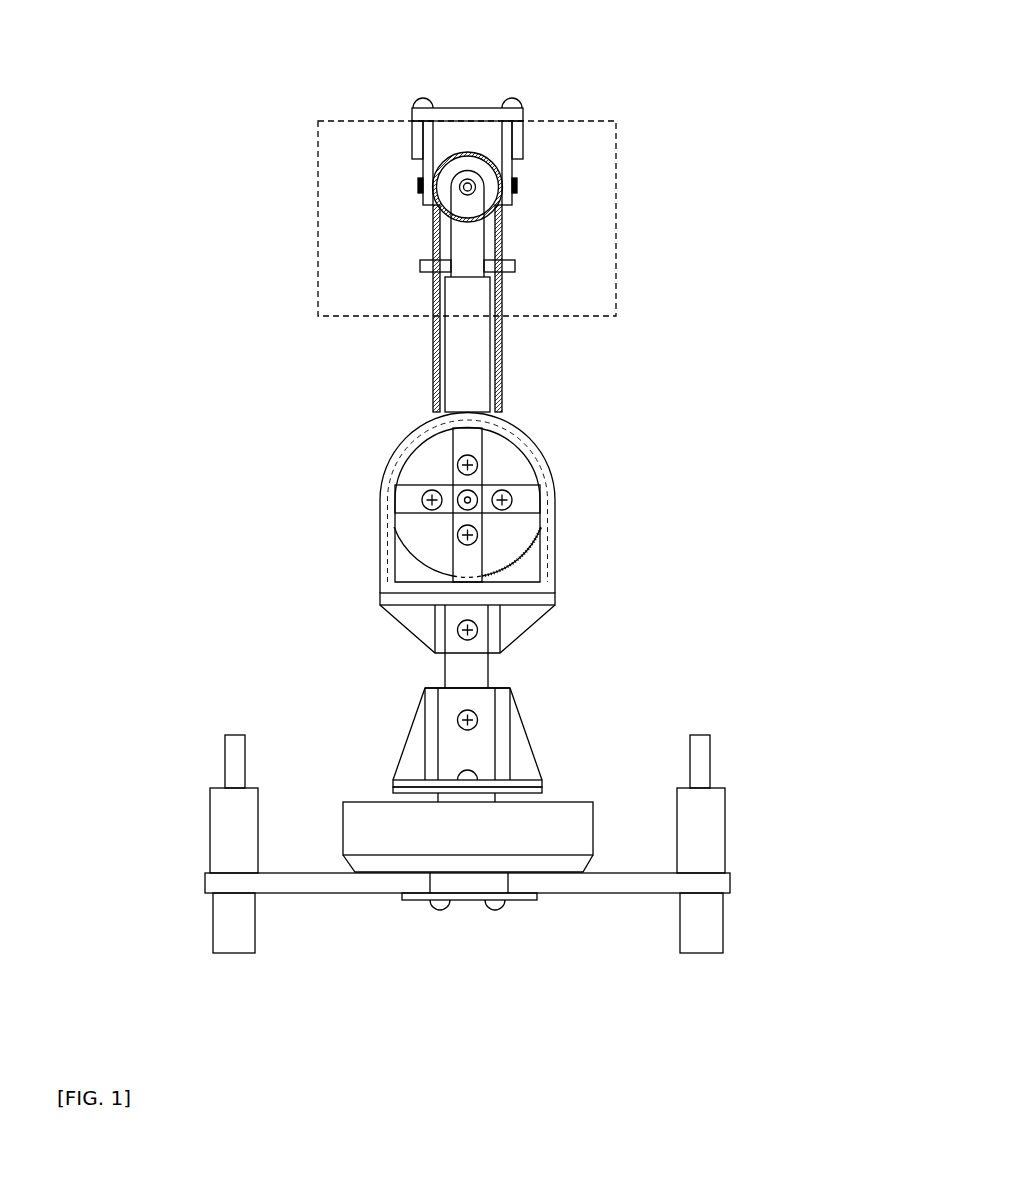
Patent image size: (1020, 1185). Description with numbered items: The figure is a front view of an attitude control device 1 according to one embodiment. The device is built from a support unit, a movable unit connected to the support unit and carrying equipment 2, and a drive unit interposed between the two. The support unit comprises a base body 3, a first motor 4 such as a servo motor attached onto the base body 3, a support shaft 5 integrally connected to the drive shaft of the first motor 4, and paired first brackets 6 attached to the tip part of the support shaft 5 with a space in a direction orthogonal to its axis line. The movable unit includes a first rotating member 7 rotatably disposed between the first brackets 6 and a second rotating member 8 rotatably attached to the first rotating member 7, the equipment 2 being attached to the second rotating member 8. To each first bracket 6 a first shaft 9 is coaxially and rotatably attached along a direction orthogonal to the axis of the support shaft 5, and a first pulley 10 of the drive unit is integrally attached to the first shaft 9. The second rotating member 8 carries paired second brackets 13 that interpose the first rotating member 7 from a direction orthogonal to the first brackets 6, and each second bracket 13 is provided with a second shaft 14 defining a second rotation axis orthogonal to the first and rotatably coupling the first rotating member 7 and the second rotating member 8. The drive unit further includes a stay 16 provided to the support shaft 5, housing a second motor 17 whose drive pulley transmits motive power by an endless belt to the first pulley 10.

The attitude control device 1 is at (588, 508).
The equipment 2 is at (616, 121).
The base body 3 is at (647, 882).
The first motor 4 is at (573, 813).
The support shaft 5 is at (485, 368).
The first brackets 6 is at (500, 235).
The first rotating member 7 is at (444, 150).
The second rotating member 8 is at (493, 113).
The first shaft 9 is at (463, 197).
The first pulley 10 is at (507, 202).
The second brackets 13 is at (427, 148).
The second shaft 14 is at (420, 185).
The stay 16 is at (555, 560).
The second motor 17 is at (422, 536).